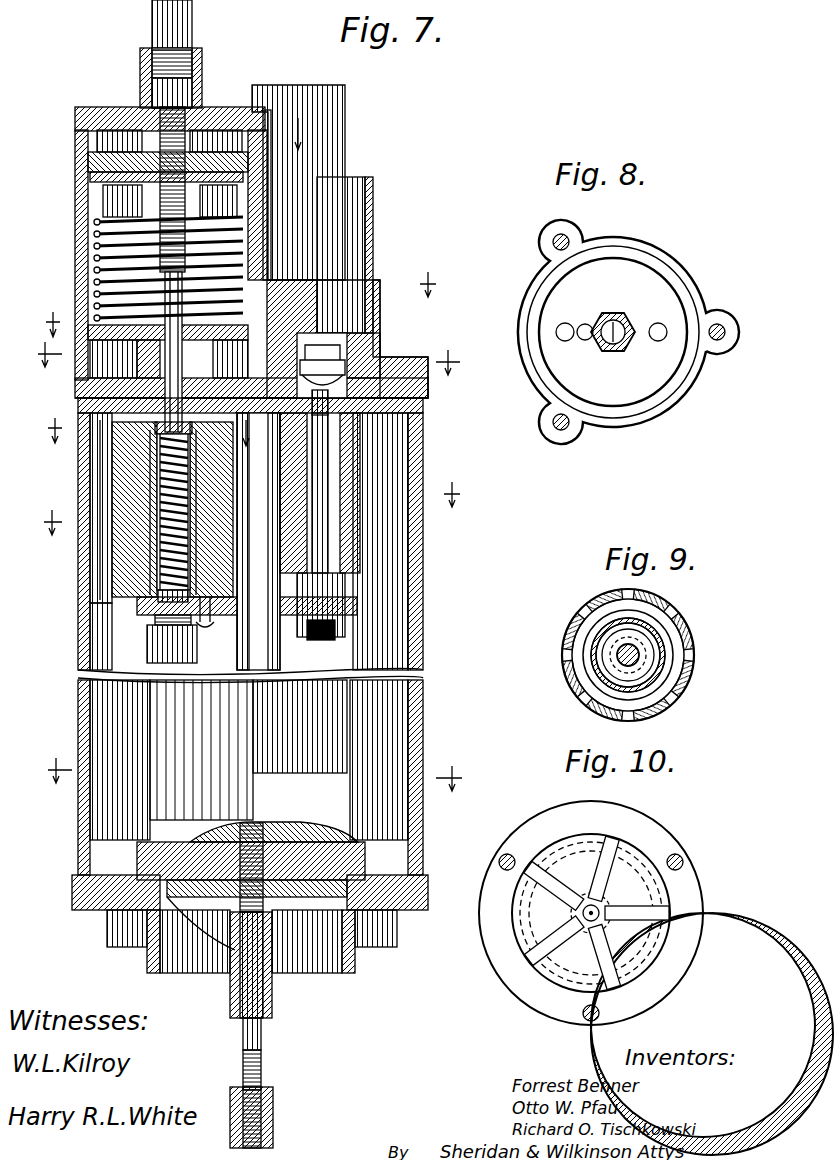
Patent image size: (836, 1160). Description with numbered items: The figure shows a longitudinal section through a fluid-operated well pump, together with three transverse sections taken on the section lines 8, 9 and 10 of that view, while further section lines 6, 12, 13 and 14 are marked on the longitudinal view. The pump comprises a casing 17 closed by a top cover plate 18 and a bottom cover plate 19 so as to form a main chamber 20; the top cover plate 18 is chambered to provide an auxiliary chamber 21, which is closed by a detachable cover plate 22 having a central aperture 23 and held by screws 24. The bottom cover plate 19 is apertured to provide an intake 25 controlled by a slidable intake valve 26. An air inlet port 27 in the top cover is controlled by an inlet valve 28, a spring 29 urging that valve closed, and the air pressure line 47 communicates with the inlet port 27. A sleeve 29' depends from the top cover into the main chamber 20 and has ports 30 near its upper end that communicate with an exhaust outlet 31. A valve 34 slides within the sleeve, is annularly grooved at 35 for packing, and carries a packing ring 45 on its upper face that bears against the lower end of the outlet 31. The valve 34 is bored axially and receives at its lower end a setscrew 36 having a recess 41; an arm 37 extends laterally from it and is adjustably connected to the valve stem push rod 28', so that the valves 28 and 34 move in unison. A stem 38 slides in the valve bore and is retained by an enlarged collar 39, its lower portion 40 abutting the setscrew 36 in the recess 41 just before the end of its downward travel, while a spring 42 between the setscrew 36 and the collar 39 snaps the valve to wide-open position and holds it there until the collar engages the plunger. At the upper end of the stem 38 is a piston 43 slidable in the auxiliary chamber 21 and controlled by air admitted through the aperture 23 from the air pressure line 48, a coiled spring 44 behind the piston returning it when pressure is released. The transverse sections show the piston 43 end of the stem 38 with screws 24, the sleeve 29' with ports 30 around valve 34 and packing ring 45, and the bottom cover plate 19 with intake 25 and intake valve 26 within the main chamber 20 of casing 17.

In FIG. 7, the section line 6 is at (305, 134).
In FIG. 7, the section line 8— 8 is at (55, 116).
In FIG. 7, the section line 9— 9 is at (156, 541).
In FIG. 7, the section line 10— 10 is at (255, 774).
In FIG. 7, the section line 12 is at (250, 358).
In FIG. 7, the section line 13 is at (242, 304).
In FIG. 7, the section line 14 is at (253, 508).
In FIG. 7, the casing 17 is at (425, 716).
In FIG. 10, the casing 17 is at (640, 810).
In FIG. 7, the top cover plate 18 is at (378, 282).
In FIG. 7, the bottom cover plate 19 is at (413, 905).
In FIG. 10, the bottom cover plate 19 is at (560, 802).
In FIG. 7, the main chamber 20 is at (415, 652).
In FIG. 10, the main chamber 20 is at (657, 842).
In FIG. 7, the auxiliary chamber 21 is at (100, 243).
In FIG. 7, the cover plate 22 is at (212, 108).
In FIG. 7, the central aperture 23 is at (188, 58).
In FIG. 7, the screws 24 is at (268, 110).
In FIG. 8, the screws 24 is at (561, 240).
In FIG. 7, the intake 25 is at (332, 968).
In FIG. 10, the intake 25 is at (545, 975).
In FIG. 7, the intake valve 26 is at (140, 862).
In FIG. 10, the intake valve 26 is at (540, 920).
In FIG. 7, the air inlet port 27 is at (345, 348).
In FIG. 7, the inlet valve 28 is at (365, 372).
In FIG. 7, the valve stem push rod 28' is at (368, 526).
In FIG. 7, the spring 29 is at (353, 344).
In FIG. 7, the sleeve 29' is at (69, 510).
In FIG. 9, the sleeve 29' is at (657, 651).
In FIG. 7, the ports 30 is at (110, 432).
In FIG. 9, the ports 30 is at (572, 632).
In FIG. 7, the exhaust outlet 31 is at (135, 378).
In FIG. 7, the valve 34 is at (150, 580).
In FIG. 9, the valve 34 is at (602, 666).
In FIG. 7, the annular groove 35 is at (135, 560).
In FIG. 7, the setscrew 36 is at (190, 640).
In FIG. 7, the arm 37 is at (218, 625).
In FIG. 7, the stem 38 is at (170, 288).
In FIG. 8, the stem 38 is at (615, 320).
In FIG. 9, the stem 38 is at (642, 660).
In FIG. 7, the collar 39 is at (160, 452).
In FIG. 7, the lower portion of stem 40 is at (172, 600).
In FIG. 7, the recess 41 is at (170, 620).
In FIG. 7, the spring 42 is at (160, 520).
In FIG. 7, the piston 43 is at (88, 158).
In FIG. 8, the piston 43 is at (618, 250).
In FIG. 7, the coiled spring 44 is at (100, 223).
In FIG. 7, the packing ring 45 is at (165, 435).
In FIG. 9, the packing ring 45 is at (648, 616).
In FIG. 7, the air pressure line 47 is at (365, 212).
In FIG. 7, the air pressure line 48 is at (160, 22).